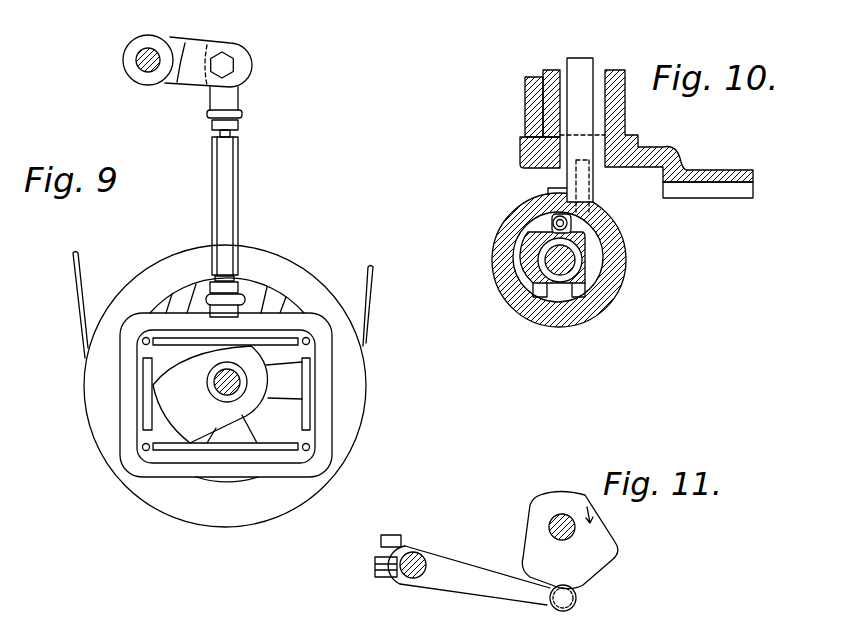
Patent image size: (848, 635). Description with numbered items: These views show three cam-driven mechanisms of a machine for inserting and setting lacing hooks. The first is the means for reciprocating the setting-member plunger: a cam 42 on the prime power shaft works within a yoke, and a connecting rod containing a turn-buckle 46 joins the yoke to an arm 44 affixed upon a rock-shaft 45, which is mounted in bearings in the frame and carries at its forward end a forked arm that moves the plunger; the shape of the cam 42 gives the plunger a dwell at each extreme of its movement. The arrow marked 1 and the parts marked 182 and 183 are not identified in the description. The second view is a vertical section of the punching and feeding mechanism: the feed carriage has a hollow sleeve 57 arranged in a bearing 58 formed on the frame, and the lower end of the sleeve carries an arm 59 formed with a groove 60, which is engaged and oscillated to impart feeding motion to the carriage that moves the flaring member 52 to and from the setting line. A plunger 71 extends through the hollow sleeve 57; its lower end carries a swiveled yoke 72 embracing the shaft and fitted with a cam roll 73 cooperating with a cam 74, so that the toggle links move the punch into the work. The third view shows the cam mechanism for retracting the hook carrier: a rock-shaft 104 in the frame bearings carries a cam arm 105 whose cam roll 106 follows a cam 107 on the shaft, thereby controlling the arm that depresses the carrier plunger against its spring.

In FIG. 9, the direction arrow 1 is at (194, 376).
In FIG. 9, the cam 42 is at (210, 394).
In FIG. 9, the arm 44 is at (186, 62).
In FIG. 9, the rock-shaft 45 is at (122, 60).
In FIG. 9, the turn-buckle 46 is at (232, 188).
In FIG. 9, the flaring member 52 is at (222, 384).
In FIG. 10, the flaring member 52 is at (575, 260).
In FIG. 11, the flaring member 52 is at (560, 514).
In FIG. 10, the hollow sleeve 57 is at (525, 111).
In FIG. 10, the bearing 58 is at (524, 81).
In FIG. 10, the arm 59 is at (753, 173).
In FIG. 10, the groove 60 is at (735, 188).
In FIG. 10, the plunger 71 is at (579, 66).
In FIG. 10, the swiveled yoke 72 is at (547, 193).
In FIG. 10, the cam roll 73 is at (552, 222).
In FIG. 10, the cam 74 is at (512, 309).
In FIG. 11, the rock-shaft 104 is at (408, 578).
In FIG. 11, the cam arm 105 is at (470, 570).
In FIG. 11, the cam roll 106 is at (573, 605).
In FIG. 11, the cam 107 is at (607, 560).
In FIG. 9, the wheel rim 182 is at (345, 352).
In FIG. 9, the blade 183 is at (377, 281).